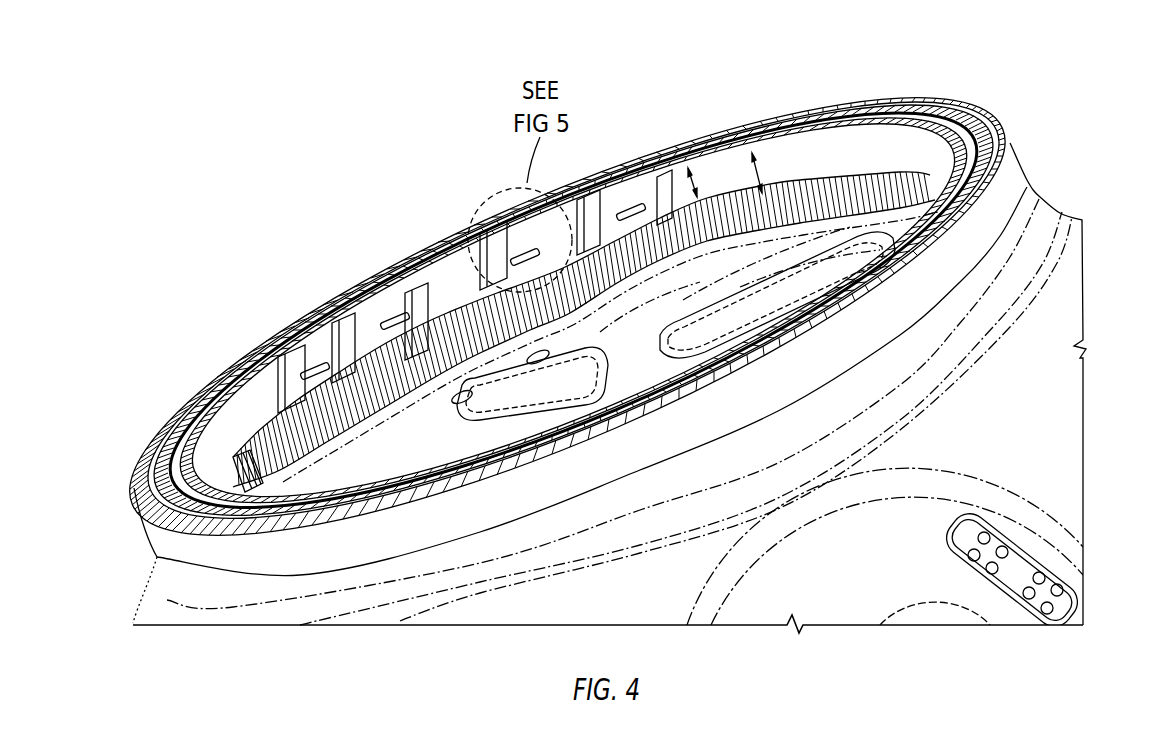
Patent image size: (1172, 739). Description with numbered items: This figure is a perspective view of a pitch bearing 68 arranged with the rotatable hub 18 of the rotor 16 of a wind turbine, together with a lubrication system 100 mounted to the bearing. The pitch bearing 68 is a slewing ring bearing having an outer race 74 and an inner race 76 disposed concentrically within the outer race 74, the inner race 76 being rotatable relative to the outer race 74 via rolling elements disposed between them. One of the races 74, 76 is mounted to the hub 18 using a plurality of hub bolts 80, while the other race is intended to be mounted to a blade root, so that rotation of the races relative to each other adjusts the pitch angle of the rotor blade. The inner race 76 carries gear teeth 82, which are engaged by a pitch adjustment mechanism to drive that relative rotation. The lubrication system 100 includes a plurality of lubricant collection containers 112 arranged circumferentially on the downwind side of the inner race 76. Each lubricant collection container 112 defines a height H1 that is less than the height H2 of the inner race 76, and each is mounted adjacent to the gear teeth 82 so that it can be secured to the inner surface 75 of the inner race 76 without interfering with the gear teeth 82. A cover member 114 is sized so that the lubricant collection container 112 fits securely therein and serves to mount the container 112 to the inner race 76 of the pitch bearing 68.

The rotor 16 is at (1092, 305).
The hub 18 is at (1057, 373).
The pitch bearing 68 is at (386, 548).
The outer race 74 is at (473, 512).
The inner surface 75 is at (425, 297).
The inner race 76 is at (237, 363).
The hub bolts 80 is at (987, 105).
The gear teeth 82 is at (190, 448).
The lubrication system 100 is at (567, 310).
The lubricant collection containers 112 is at (378, 300).
The cover member 114 is at (593, 240).
The height of lubricant collection container H1 is at (703, 186).
The height of inner race H2 is at (770, 170).